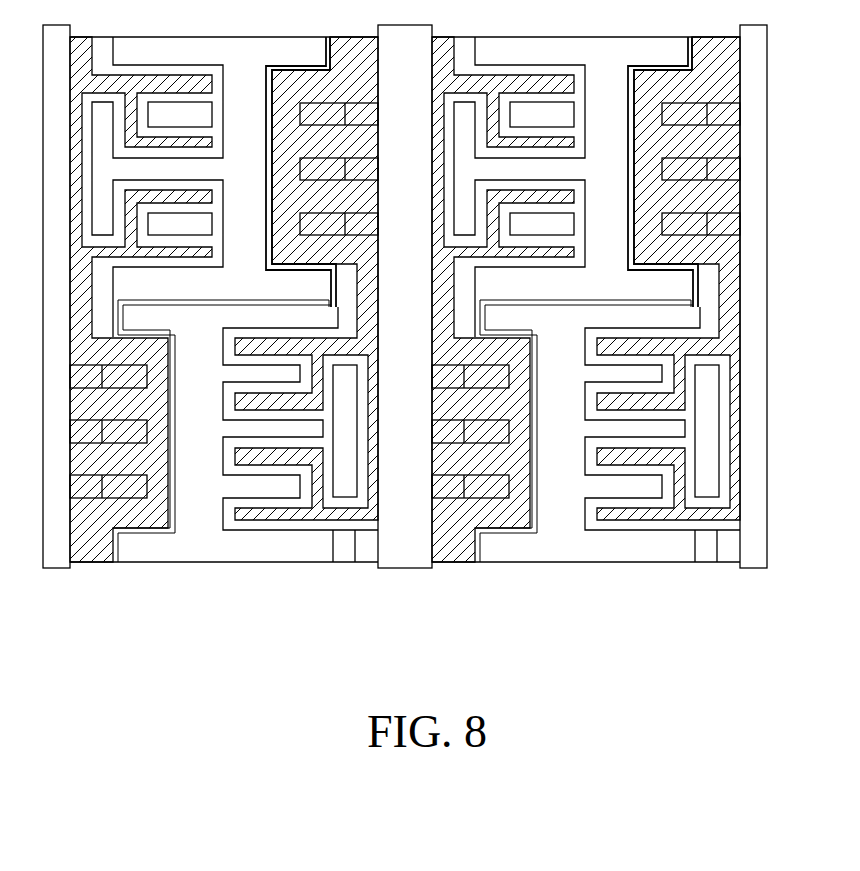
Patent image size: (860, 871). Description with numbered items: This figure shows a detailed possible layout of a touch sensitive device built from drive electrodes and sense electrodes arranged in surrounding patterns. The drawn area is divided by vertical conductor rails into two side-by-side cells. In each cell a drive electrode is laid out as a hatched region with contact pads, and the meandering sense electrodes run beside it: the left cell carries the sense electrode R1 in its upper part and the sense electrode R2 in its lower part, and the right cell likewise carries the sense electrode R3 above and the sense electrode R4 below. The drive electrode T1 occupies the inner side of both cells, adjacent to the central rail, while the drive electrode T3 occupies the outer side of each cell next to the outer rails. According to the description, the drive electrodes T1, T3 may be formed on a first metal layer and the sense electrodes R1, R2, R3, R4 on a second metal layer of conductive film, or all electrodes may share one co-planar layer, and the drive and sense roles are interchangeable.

The sense electrode R1 is at (164, 299).
The sense electrode R2 is at (280, 434).
The sense electrode R3 is at (526, 299).
The sense electrode R4 is at (642, 434).
The drive electrode T1 is at (487, 278).
The drive electrode T3 is at (403, 425).